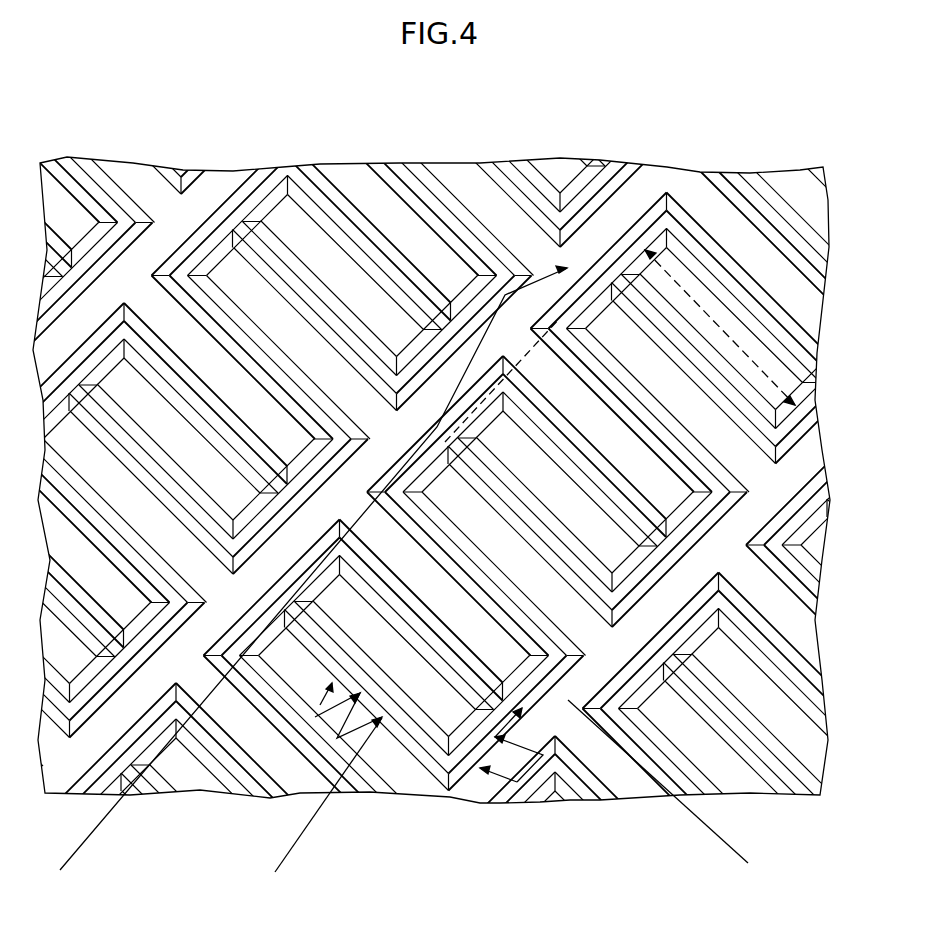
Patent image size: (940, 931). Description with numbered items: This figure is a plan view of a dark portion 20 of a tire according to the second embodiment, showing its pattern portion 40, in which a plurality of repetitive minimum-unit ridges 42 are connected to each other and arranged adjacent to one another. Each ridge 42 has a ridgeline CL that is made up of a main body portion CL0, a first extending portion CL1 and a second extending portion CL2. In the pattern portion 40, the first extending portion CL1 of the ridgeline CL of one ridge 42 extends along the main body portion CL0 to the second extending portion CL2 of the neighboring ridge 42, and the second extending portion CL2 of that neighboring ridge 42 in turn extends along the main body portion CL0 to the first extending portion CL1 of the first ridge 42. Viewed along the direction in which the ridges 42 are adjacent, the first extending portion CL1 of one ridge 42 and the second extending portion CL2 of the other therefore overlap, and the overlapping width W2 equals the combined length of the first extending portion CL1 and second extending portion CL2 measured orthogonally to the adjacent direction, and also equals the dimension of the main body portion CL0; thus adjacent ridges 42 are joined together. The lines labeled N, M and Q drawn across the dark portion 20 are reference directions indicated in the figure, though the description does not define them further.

The dark portion 20 is at (833, 128).
The pattern portion 40 is at (697, 218).
The ridge 42 is at (690, 642).
The overlapping width W2 is at (722, 322).
The direction N is at (70, 844).
The direction M is at (295, 845).
The direction Q is at (708, 832).
The ridgeline CL is at (428, 450).
The main body portion CL0 is at (340, 485).
The first extending portion CL1 is at (455, 372).
The second extending portion CL2 is at (242, 567).